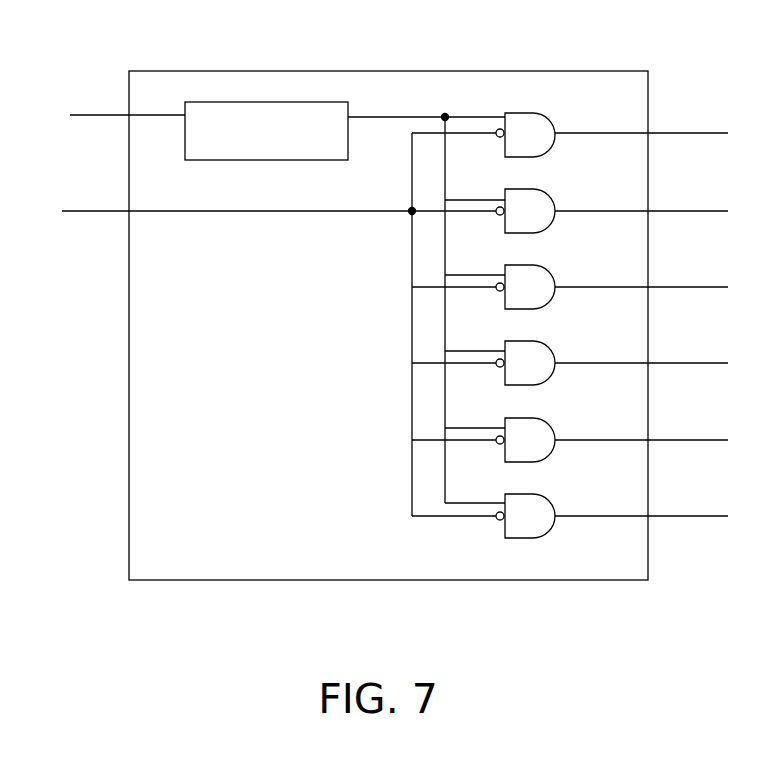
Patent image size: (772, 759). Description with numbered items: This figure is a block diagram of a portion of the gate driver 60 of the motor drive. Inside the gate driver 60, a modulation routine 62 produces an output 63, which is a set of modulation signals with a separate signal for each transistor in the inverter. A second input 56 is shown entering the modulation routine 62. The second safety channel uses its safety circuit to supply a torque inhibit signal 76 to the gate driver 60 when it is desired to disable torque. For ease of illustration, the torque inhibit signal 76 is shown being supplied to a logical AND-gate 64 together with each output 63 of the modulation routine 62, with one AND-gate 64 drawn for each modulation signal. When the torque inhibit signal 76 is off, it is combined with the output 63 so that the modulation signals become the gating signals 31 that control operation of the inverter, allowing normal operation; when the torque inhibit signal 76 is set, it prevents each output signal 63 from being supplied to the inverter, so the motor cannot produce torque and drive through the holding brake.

The gate driver 60 is at (547, 71).
The input signal line 56 is at (96, 115).
The torque inhibit signal 76 is at (87, 211).
The modulation routine 62 is at (247, 160).
The output of the modulation routine 63 is at (370, 117).
The logical AND-gate 64 is at (548, 113).
The gating signals 31 is at (681, 133).